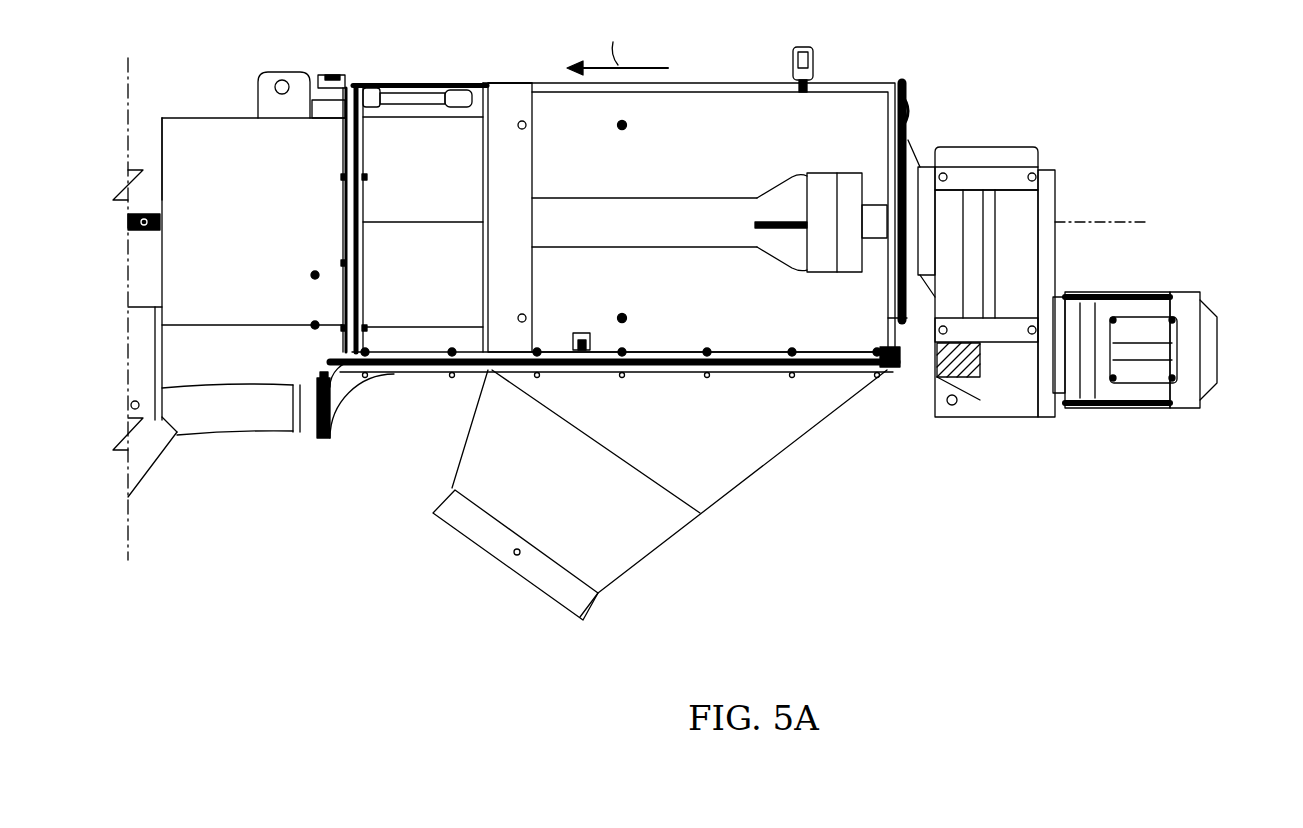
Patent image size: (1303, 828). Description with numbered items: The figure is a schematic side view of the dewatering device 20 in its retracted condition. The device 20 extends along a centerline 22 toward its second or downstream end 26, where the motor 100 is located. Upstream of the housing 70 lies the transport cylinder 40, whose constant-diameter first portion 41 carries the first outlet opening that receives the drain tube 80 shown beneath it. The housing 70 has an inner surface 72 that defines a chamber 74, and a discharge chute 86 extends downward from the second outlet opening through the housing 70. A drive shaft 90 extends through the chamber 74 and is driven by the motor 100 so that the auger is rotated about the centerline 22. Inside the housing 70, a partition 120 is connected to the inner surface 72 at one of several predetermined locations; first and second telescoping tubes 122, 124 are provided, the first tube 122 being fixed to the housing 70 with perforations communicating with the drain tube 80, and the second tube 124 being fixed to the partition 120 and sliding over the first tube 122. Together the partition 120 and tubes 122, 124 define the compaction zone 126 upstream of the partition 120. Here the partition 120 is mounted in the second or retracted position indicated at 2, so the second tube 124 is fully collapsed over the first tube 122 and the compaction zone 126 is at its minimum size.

The retracted position 2 is at (505, 82).
The dewatering device 20 is at (915, 58).
The centerline 22 is at (1127, 222).
The second or downstream end 26 is at (935, 114).
The transport cylinder 40 is at (233, 118).
The first portion 41 is at (180, 130).
The housing 70 is at (735, 82).
The inner surface 72 is at (657, 333).
The chamber 74 is at (740, 278).
The drain tube 80 is at (372, 413).
The discharge chute 86 is at (653, 550).
The drive shaft 90 is at (668, 197).
The motor 100 is at (1217, 347).
The partition 120 is at (508, 342).
The first tube 122 is at (428, 132).
The second tube 124 is at (465, 135).
The compaction zone 126 is at (385, 132).